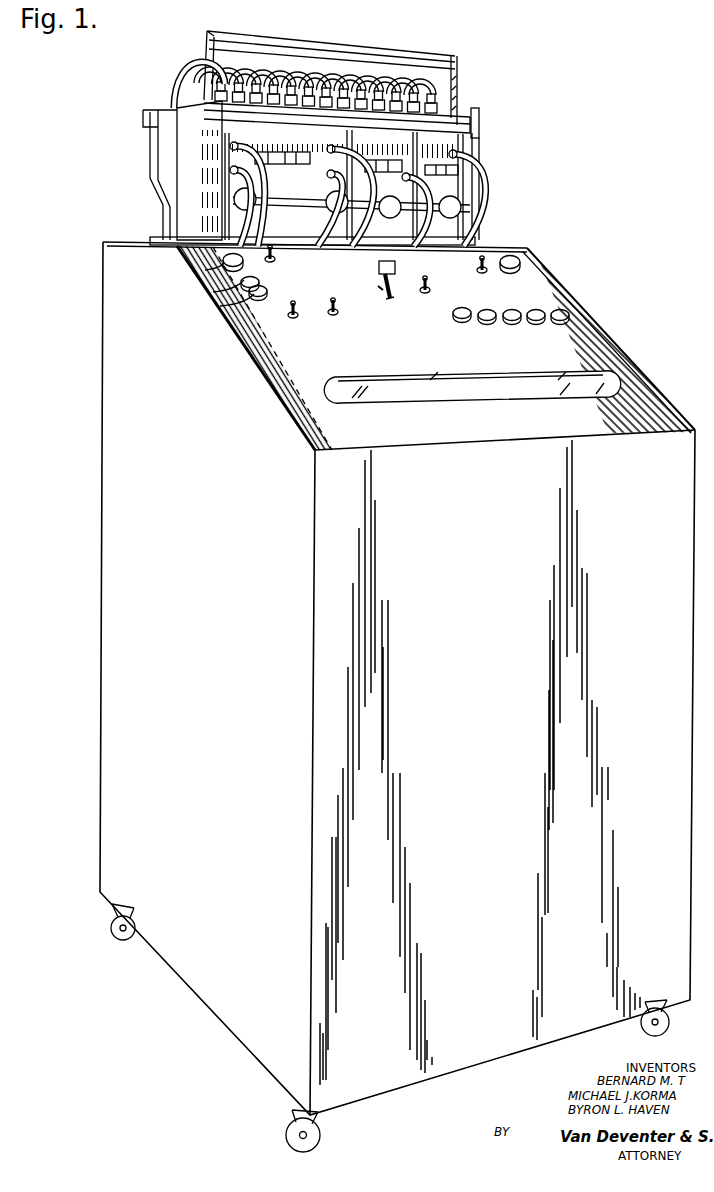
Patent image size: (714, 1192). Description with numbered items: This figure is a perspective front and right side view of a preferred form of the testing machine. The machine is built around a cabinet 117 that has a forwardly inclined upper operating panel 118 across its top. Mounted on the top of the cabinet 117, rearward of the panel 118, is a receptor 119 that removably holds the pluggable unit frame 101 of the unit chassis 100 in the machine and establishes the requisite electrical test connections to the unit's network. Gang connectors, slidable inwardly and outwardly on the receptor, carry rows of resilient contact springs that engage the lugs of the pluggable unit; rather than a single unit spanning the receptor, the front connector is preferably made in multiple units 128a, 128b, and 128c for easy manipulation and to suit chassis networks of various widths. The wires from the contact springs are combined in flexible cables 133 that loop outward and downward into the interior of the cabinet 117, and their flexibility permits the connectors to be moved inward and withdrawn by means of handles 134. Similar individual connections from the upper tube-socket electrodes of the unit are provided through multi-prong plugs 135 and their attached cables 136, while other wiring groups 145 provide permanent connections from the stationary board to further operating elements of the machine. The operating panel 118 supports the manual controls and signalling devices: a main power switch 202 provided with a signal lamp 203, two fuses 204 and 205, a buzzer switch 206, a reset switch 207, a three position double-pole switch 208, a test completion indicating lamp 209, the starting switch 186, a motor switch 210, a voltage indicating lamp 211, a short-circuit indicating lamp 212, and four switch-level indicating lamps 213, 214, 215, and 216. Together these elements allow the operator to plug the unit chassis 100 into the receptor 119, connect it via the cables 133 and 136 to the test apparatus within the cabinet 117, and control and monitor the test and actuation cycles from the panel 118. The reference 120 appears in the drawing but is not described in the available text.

The unit chassis 100 is at (466, 58).
The pluggable unit frame 101 is at (460, 82).
The cabinet 117 is at (103, 585).
The upper operating panel 118 is at (306, 424).
The receptor 119 is at (487, 120).
The frame legs 120 is at (176, 108).
The gang connector unit 128a is at (238, 130).
The gang connector unit 128b is at (400, 152).
The gang connector unit 128c is at (458, 144).
The flexible cables 133 is at (262, 196).
The handles 134 is at (298, 152).
The multi-prong plugs 135 is at (220, 90).
The cables 136 is at (182, 74).
The wiring groups 145 is at (403, 392).
The starting switch 186 is at (432, 290).
The main power switch 202 is at (277, 260).
The signal lamp 203 is at (205, 270).
The fuse 204 is at (213, 292).
The fuse 205 is at (220, 306).
The buzzer switch 206 is at (291, 319).
The reset switch 207 is at (334, 318).
The three position double-pole switch 208 is at (378, 290).
The test completion indicating lamp 209 is at (394, 268).
The motor switch 210 is at (482, 276).
The voltage indicating lamp 211 is at (521, 263).
The short-circuit indicating lamp 212 is at (458, 321).
The switch-level indicating lamp 213 is at (486, 323).
The switch-level indicating lamp 214 is at (510, 324).
The switch-level indicating lamp 215 is at (536, 323).
The switch-level indicating lamp 216 is at (561, 323).